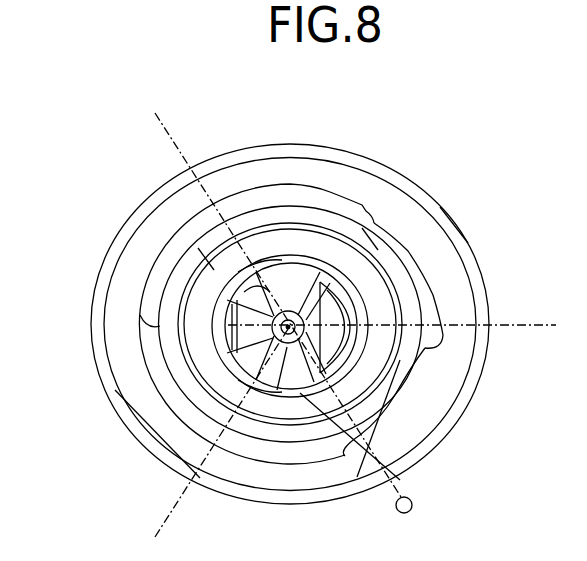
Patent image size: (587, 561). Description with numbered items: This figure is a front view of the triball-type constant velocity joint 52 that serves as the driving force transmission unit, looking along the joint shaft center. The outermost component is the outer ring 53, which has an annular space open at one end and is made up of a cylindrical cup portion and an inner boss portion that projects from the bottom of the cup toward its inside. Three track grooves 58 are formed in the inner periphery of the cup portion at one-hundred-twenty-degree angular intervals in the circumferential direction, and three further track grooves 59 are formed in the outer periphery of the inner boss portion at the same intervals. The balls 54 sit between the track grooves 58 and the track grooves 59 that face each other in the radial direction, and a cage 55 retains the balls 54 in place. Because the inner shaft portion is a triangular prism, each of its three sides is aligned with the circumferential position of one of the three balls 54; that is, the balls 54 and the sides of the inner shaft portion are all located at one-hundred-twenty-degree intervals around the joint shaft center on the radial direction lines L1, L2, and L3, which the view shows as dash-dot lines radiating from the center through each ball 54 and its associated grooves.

The triball-type constant velocity joint 52 is at (288, 329).
The outer ring 53 is at (440, 207).
The balls 54 is at (256, 205).
The cage 55 is at (195, 335).
The track grooves 58 is at (231, 185).
The track grooves 59 is at (196, 260).
The radial direction line L1 is at (178, 155).
The radial direction line L2 is at (505, 327).
The radial direction line L3 is at (187, 500).